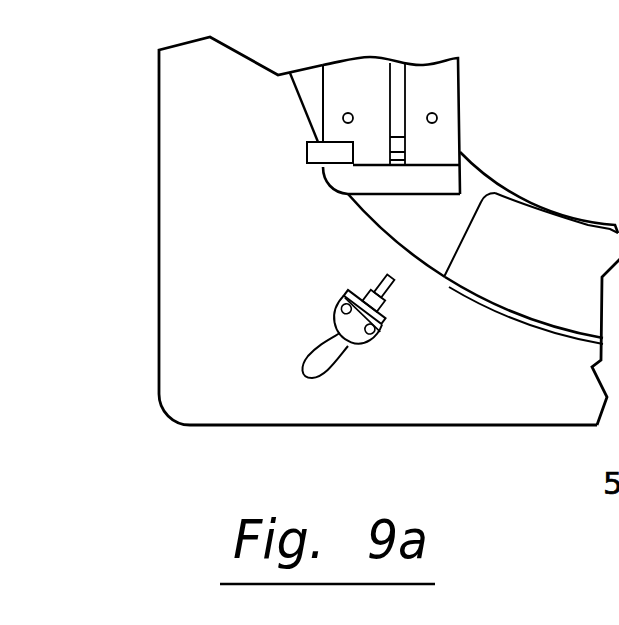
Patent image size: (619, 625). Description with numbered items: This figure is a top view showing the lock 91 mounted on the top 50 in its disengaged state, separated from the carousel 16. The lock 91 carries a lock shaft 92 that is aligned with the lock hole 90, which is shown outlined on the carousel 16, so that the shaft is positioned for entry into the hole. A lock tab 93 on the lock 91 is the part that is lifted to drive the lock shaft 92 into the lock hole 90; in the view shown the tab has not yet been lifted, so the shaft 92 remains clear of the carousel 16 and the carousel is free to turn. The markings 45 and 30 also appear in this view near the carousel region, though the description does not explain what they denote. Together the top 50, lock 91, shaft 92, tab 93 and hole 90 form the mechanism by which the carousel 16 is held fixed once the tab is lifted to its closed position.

The top 50 is at (180, 150).
The carousel 16 is at (475, 178).
The lip arc 45 is at (374, 245).
The lower rim 30 is at (495, 327).
The lock hole 90 is at (397, 314).
The lock 91 is at (362, 352).
The lock shaft 92 is at (397, 278).
The lock tab 93 is at (317, 357).